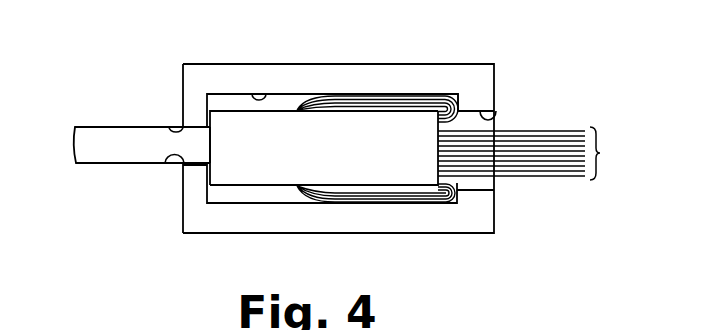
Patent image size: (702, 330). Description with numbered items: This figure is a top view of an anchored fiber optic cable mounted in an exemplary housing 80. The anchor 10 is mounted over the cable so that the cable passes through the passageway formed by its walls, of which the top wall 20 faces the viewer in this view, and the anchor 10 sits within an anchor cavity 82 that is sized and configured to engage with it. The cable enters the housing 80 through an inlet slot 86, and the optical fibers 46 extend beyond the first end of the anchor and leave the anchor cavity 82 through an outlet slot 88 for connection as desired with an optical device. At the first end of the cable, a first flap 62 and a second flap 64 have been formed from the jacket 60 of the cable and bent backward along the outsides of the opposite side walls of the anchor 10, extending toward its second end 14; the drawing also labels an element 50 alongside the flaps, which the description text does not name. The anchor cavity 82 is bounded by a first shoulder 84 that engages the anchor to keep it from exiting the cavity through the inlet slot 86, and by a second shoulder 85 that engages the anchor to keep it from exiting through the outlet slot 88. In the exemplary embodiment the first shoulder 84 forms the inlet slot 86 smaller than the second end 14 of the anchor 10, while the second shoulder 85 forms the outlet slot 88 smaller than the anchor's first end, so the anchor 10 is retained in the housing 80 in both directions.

The anchor 10 is at (263, 161).
The second end 14 is at (210, 150).
The top wall 20 is at (305, 160).
The optical fibers 46 is at (536, 153).
The coiled fiber / coil 50 is at (340, 99).
The jacket 60 is at (88, 164).
The first flap 62 is at (400, 189).
The second flap 64 is at (393, 98).
The housing 80 is at (237, 56).
The anchor cavity 82 is at (266, 91).
The first shoulder 84 is at (214, 93).
The second shoulder 85 is at (450, 97).
The inlet slot 86 is at (173, 126).
The outlet slot 88 is at (497, 120).